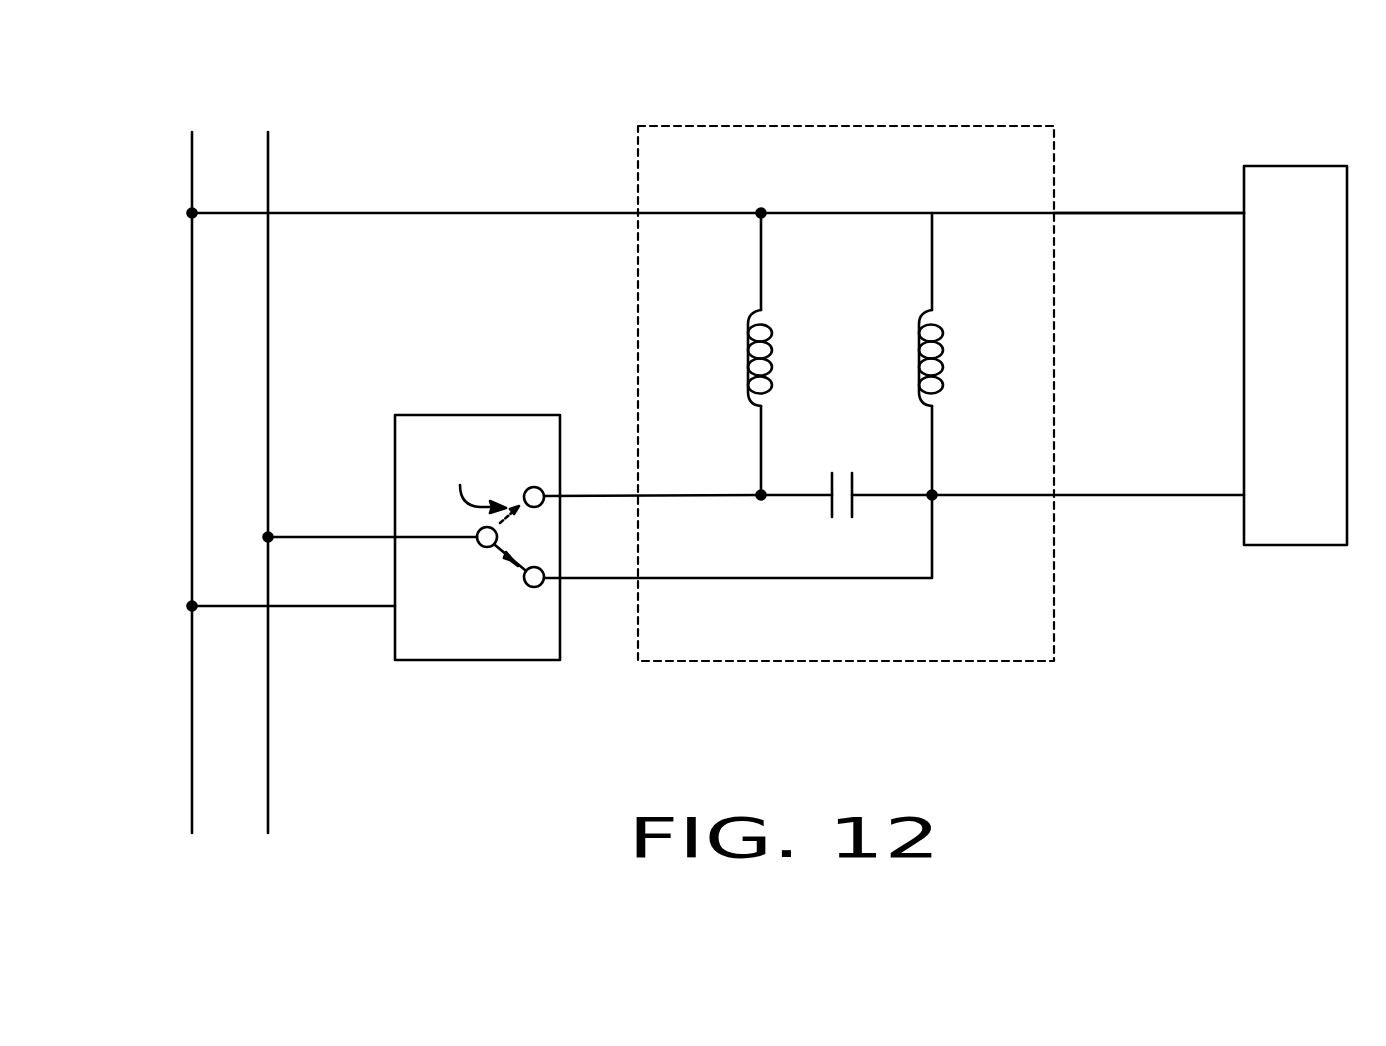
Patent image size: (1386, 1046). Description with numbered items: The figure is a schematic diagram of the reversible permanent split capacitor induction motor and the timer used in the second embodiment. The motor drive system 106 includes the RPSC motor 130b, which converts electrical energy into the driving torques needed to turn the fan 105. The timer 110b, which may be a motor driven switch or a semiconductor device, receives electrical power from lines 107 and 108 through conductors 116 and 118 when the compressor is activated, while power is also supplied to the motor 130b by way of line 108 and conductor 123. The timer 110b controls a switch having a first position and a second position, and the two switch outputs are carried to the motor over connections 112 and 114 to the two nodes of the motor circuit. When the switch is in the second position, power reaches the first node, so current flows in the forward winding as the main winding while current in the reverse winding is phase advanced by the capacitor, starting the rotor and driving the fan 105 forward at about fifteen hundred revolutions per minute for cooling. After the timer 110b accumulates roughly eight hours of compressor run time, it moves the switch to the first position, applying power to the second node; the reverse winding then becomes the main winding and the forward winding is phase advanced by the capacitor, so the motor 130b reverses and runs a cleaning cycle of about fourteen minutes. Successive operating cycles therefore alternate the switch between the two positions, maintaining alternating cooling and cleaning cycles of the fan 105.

The fan 105 is at (1270, 545).
The motor drive system 106 is at (910, 661).
The line 107 is at (268, 173).
The line 108 is at (192, 183).
The timer 110b is at (535, 660).
The connection line to node N10 112 is at (598, 495).
The connection line to node N20 114 is at (597, 578).
The conductor 116 is at (297, 537).
The conductor 118 is at (297, 606).
The conductor 123 is at (468, 213).
The RPSC induction motor 130b is at (895, 173).